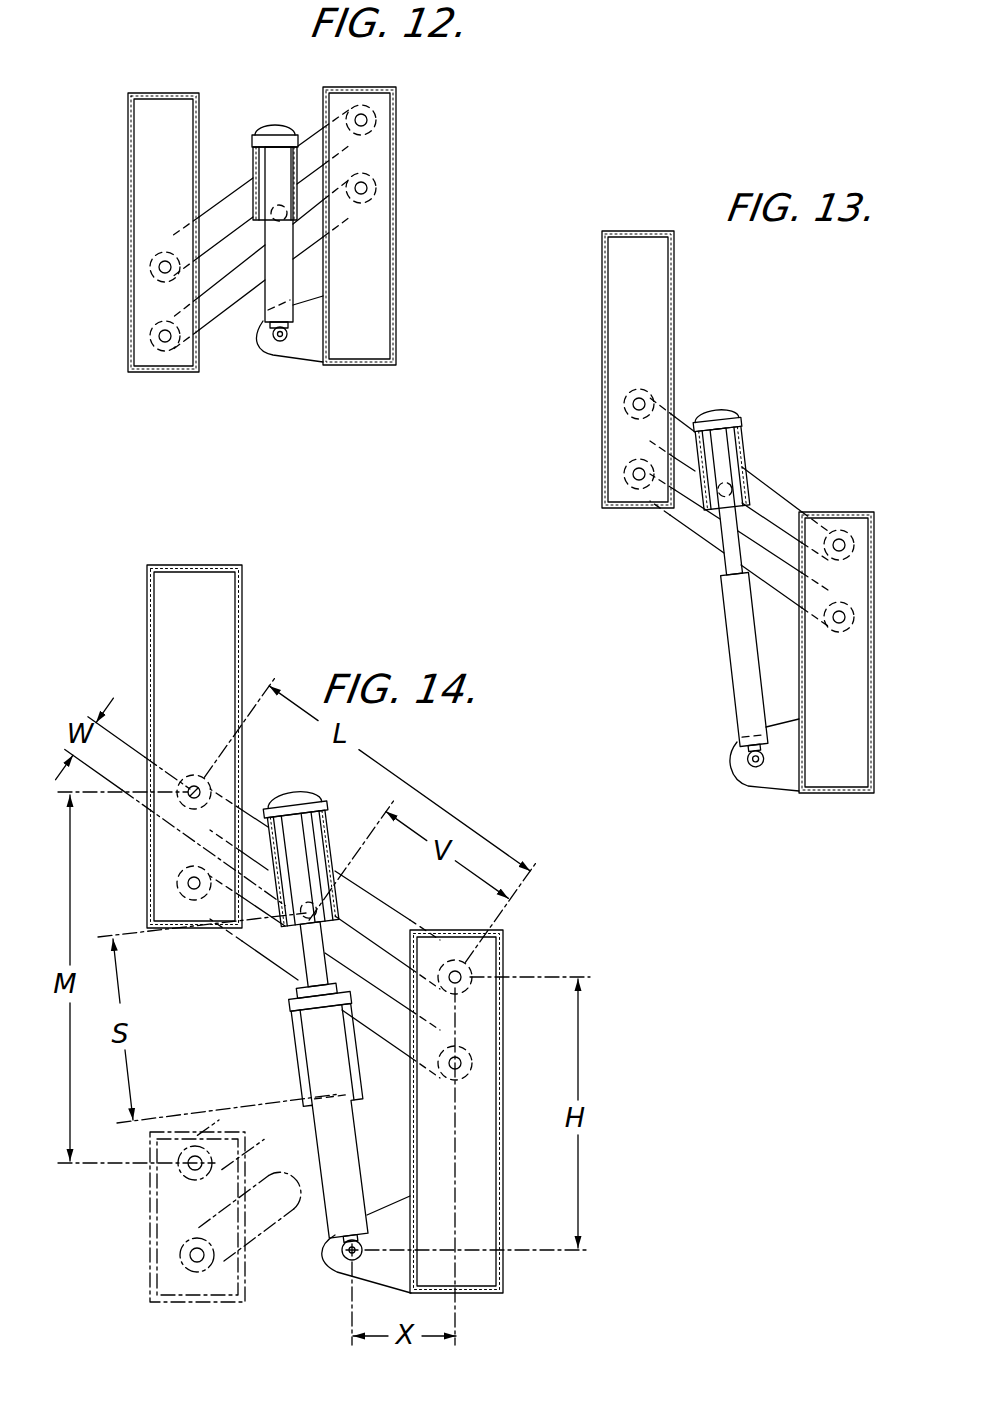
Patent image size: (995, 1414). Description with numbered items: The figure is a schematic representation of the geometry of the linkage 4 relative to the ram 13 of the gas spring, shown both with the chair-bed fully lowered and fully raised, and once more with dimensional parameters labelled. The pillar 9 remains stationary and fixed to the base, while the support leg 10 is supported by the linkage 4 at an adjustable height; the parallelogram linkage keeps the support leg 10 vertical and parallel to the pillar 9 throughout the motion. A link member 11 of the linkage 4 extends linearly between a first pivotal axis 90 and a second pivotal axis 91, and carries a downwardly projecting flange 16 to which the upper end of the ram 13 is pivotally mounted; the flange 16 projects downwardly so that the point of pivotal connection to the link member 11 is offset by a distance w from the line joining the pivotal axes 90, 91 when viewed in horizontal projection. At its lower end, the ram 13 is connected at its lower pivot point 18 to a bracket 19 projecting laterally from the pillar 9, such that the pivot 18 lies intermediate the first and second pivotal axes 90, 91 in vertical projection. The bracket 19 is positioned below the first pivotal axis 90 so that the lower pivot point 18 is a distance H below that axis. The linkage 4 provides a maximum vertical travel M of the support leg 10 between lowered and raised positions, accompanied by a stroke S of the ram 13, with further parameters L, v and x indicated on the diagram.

In FIG. 12, the linkage 4 is at (217, 140).
In FIG. 13, the linkage 4 is at (779, 455).
In FIG. 14, the linkage 4 is at (404, 907).
In FIG. 12, the pillar 9 is at (383, 160).
In FIG. 13, the pillar 9 is at (858, 585).
In FIG. 14, the pillar 9 is at (492, 1272).
In FIG. 12, the support leg 10 is at (137, 110).
In FIG. 13, the support leg 10 is at (608, 299).
In FIG. 14, the support leg 10 is at (158, 603).
In FIG. 12, the link member 11 is at (220, 213).
In FIG. 13, the link member 11 is at (766, 495).
In FIG. 14, the link member 11 is at (366, 886).
In FIG. 12, the ram 13 is at (243, 315).
In FIG. 13, the ram 13 is at (704, 637).
In FIG. 14, the ram 13 is at (307, 1133).
In FIG. 14, the flange 16 is at (252, 944).
In FIG. 12, the lower pivot point 18 is at (280, 341).
In FIG. 13, the lower pivot point 18 is at (747, 768).
In FIG. 14, the lower pivot point 18 is at (341, 1250).
In FIG. 12, the bracket 19 is at (310, 347).
In FIG. 13, the bracket 19 is at (783, 784).
In FIG. 14, the bracket 19 is at (330, 1270).
In FIG. 14, the first pivotal axis 90 is at (463, 973).
In FIG. 14, the second pivotal axis 91 is at (192, 786).